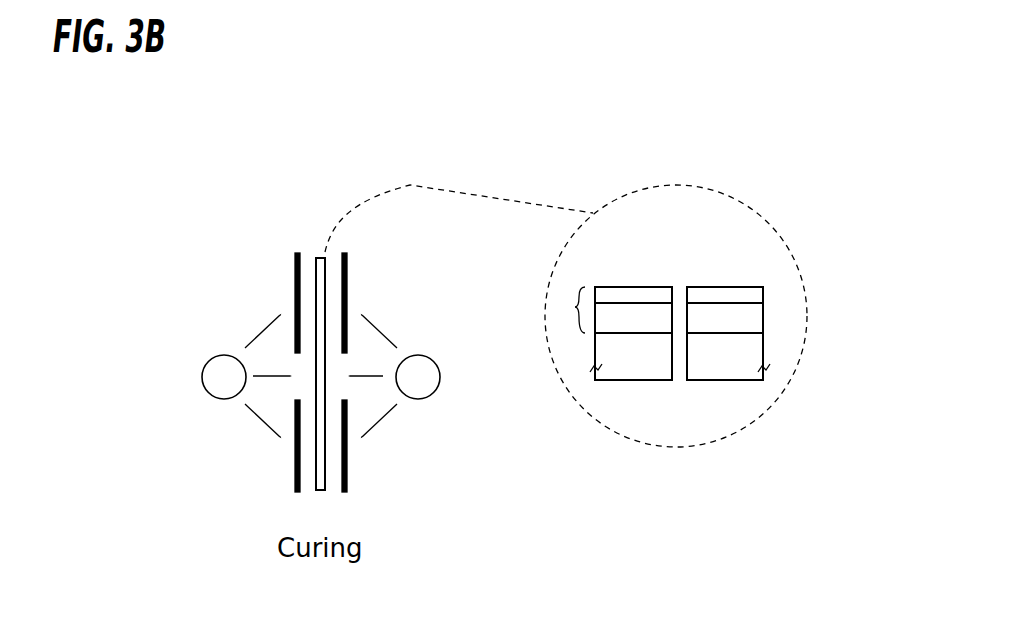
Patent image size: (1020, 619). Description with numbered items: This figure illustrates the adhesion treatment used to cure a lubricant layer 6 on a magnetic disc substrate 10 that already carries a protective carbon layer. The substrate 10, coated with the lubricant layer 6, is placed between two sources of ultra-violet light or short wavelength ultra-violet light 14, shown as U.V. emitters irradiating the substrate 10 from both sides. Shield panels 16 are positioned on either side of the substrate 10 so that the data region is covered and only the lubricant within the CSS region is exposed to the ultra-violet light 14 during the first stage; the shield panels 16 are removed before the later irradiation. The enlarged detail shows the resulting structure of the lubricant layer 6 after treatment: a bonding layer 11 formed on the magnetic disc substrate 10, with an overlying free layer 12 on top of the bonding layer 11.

The lubricant layer 6 is at (578, 305).
The magnetic disc substrate 10 is at (322, 468).
The bonding layer 11 is at (757, 318).
The free layer 12 is at (747, 293).
The ultra-violet light 14 is at (218, 356).
The shield panels 16 is at (297, 270).